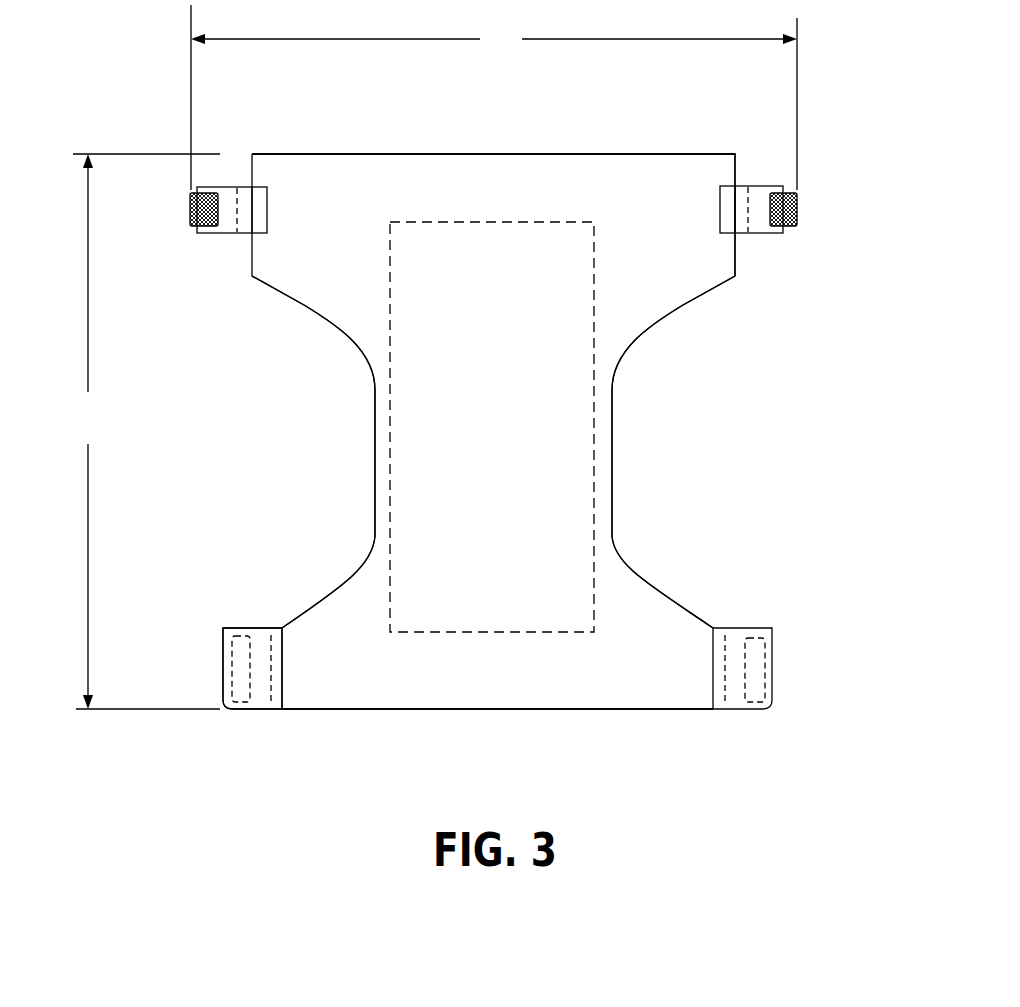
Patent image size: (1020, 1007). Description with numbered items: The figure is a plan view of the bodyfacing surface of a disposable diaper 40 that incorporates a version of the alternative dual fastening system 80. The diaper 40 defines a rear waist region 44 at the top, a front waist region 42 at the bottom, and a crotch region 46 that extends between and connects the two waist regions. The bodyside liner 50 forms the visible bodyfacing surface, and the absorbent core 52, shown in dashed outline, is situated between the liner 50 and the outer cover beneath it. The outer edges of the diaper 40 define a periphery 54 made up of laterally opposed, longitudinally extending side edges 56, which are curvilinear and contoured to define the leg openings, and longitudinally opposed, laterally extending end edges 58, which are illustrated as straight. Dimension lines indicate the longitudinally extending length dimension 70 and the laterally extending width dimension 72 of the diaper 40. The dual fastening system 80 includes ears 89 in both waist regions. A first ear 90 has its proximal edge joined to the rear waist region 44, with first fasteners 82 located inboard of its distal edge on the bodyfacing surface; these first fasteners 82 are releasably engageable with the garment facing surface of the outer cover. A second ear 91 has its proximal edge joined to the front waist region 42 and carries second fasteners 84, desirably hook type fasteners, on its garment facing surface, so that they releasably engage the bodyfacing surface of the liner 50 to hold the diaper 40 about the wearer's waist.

The diaper 40 is at (733, 108).
The front waist region 42 is at (710, 578).
The rear waist region 44 is at (767, 282).
The crotch region 46 is at (760, 437).
The bodyside liner 50 is at (376, 166).
The absorbent core 52 is at (404, 354).
The periphery 54 is at (683, 306).
The longitudinal side edges 56 is at (346, 583).
The lateral end edges 58 is at (636, 152).
The length dimension 70 is at (146, 431).
The width dimension 72 is at (494, 97).
The dual fastening system 80 is at (207, 145).
The first fasteners 82 is at (196, 191).
The second fasteners 84 is at (234, 650).
The ears 89 is at (238, 234).
The first ear 90 is at (236, 192).
The second ear 91 is at (262, 710).